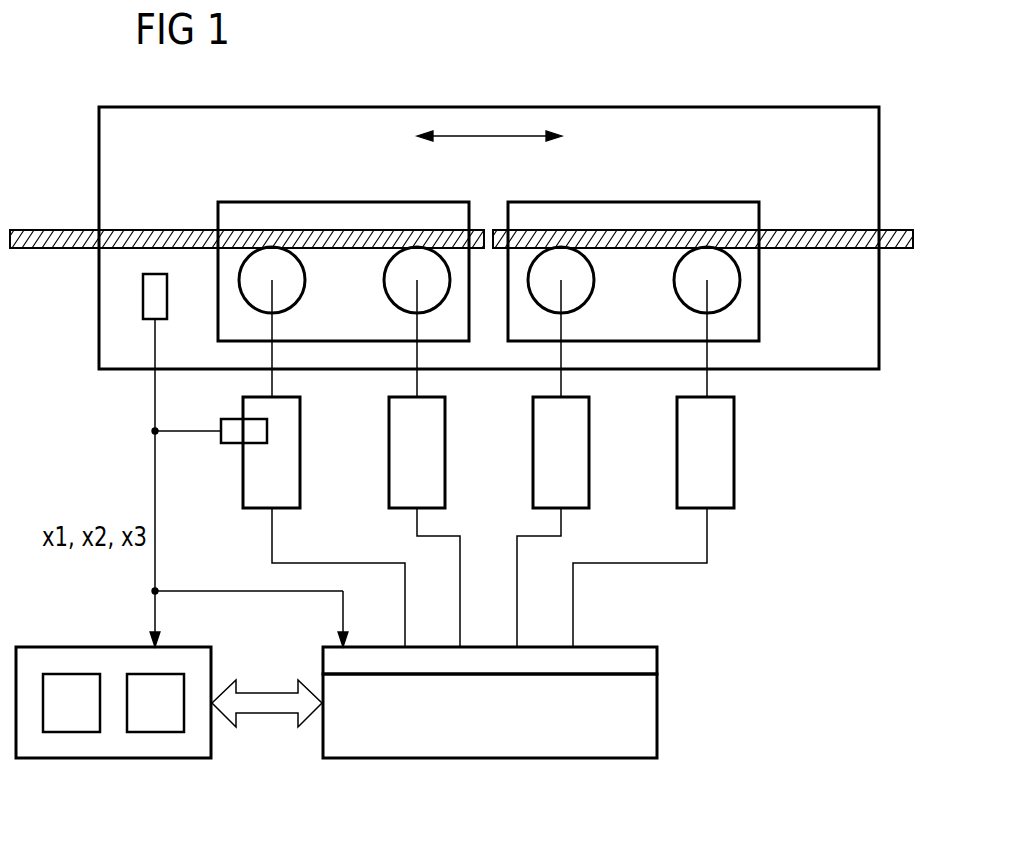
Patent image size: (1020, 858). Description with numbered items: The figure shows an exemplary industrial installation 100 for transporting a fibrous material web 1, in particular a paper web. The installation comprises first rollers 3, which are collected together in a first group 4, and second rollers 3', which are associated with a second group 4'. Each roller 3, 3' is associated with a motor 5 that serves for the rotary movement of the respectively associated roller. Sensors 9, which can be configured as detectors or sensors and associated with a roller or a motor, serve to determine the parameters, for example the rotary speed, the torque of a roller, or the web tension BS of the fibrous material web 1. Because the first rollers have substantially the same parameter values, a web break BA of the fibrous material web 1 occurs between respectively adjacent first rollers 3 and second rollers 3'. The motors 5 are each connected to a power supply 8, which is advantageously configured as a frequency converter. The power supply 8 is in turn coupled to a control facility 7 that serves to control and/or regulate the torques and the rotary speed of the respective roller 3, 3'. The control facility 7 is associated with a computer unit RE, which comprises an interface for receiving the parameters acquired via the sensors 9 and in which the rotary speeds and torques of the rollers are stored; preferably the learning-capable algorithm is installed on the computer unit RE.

The industrial installation 100 is at (741, 138).
The fibrous material web 1 is at (808, 230).
The first group 4 is at (343, 237).
The second group 4' is at (633, 238).
The first rollers 3 is at (344, 292).
The second rollers 3' is at (634, 292).
The sensors 9 is at (143, 298).
The motor 5 is at (300, 448).
The power supply 8 is at (657, 660).
The control facility 7 is at (657, 715).
The web tension BS is at (480, 136).
The web break BA is at (490, 212).
The computer unit RE is at (113, 758).